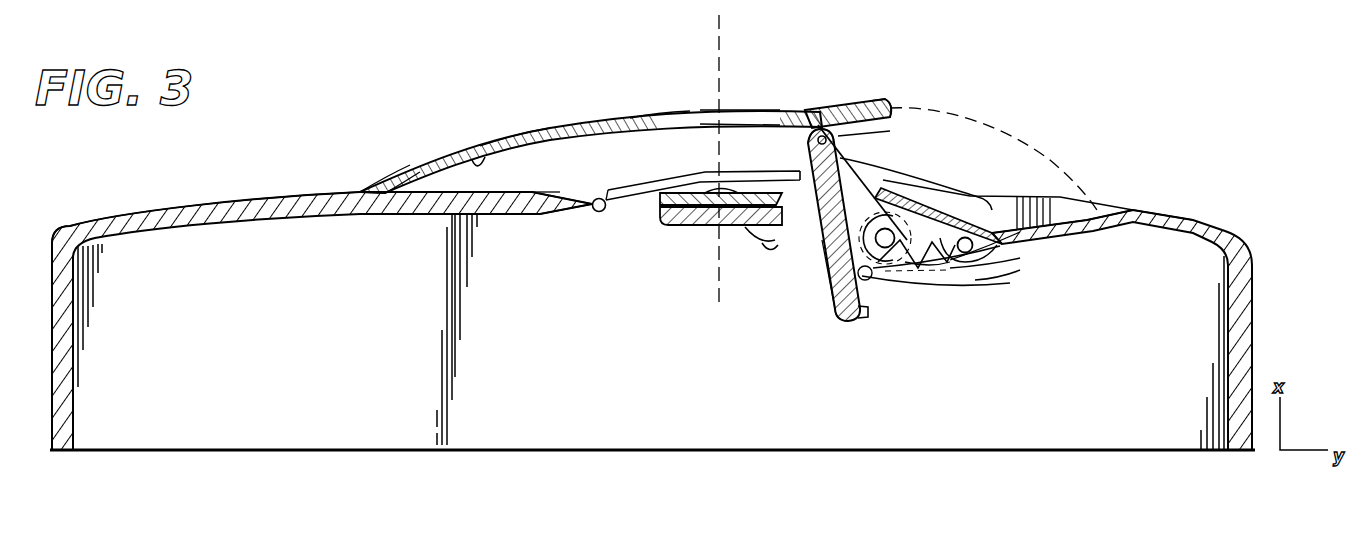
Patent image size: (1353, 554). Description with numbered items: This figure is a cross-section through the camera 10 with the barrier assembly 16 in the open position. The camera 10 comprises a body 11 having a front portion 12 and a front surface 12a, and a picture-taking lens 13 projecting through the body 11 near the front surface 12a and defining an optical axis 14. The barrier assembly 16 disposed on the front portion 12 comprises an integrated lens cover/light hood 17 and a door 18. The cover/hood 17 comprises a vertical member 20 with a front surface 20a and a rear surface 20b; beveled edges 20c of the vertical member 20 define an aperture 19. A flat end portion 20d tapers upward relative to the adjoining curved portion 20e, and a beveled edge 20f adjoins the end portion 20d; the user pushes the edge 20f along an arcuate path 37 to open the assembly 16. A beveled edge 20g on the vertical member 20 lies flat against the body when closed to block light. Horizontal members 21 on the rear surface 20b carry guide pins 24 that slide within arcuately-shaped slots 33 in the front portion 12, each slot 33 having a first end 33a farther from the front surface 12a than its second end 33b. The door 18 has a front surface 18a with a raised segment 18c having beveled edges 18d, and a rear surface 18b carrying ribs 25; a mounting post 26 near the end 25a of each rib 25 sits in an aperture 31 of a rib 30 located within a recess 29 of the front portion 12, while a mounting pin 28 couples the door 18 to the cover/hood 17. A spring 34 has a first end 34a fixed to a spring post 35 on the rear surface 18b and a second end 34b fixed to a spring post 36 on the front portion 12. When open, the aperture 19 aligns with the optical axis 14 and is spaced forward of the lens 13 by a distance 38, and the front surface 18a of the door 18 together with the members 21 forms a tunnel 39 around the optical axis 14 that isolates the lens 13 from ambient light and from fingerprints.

The camera 10 is at (1262, 212).
The body 11 is at (1254, 303).
The front portion 12 is at (1187, 247).
The front surface 12a is at (130, 214).
The picture-taking lens 13 is at (698, 227).
The optical axis 14 is at (720, 23).
The barrier assembly 16 is at (893, 80).
The integrated lens cover/light hood 17 is at (418, 163).
The door 18 is at (828, 309).
The front surface 18a is at (807, 150).
The rear surface 18b is at (866, 312).
The raised segment 18c is at (827, 288).
The edges 18d is at (848, 318).
The aperture 19 is at (736, 108).
The vertical member 20 is at (550, 122).
The front surface 20a is at (505, 135).
The rear surface 20b is at (478, 158).
The edges 20c is at (660, 112).
The end portion 20d is at (856, 106).
The curved portion 20e is at (372, 162).
The edge 20f is at (890, 106).
The edge 20g is at (372, 200).
The horizontal members 21 is at (563, 182).
The guide pin 24 is at (592, 208).
The ribs 25 is at (876, 160).
The end 25a is at (873, 138).
The mounting post 26 is at (925, 197).
The mounting pin 28 is at (819, 124).
The recess 29 is at (1067, 213).
The ribs 30 is at (953, 227).
The aperture 31 is at (862, 182).
The arcuately-shaped slots 33 is at (638, 193).
The first end 33a is at (770, 250).
The second end 33b is at (612, 203).
The spring 34 is at (930, 264).
The first end 34a is at (953, 288).
The second end 34b is at (990, 273).
The spring post 35 is at (872, 282).
The spring post 36 is at (987, 258).
The arcuate path 37 is at (1020, 142).
The distance 38 is at (700, 152).
The tunnel 39 is at (738, 128).